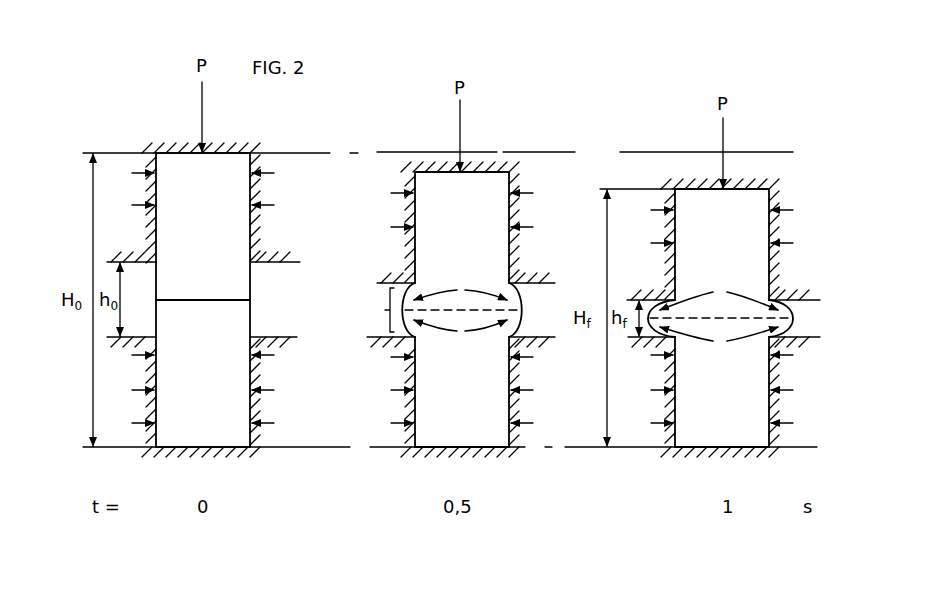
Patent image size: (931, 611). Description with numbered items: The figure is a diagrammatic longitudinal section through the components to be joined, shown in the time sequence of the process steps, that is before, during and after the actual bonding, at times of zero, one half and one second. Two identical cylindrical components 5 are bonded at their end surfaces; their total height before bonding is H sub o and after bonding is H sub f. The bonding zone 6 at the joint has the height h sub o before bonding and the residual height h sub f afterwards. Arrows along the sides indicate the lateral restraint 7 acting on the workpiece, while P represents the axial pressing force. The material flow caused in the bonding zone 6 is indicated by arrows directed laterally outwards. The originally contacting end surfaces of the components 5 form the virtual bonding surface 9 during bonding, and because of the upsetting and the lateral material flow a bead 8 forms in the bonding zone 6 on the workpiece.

The cylindrical components 5 is at (183, 177).
The bonding zone 6 is at (385, 310).
The lateral restraint 7 is at (155, 205).
The bead 8 is at (793, 303).
The virtual bonding surface 9 is at (458, 310).